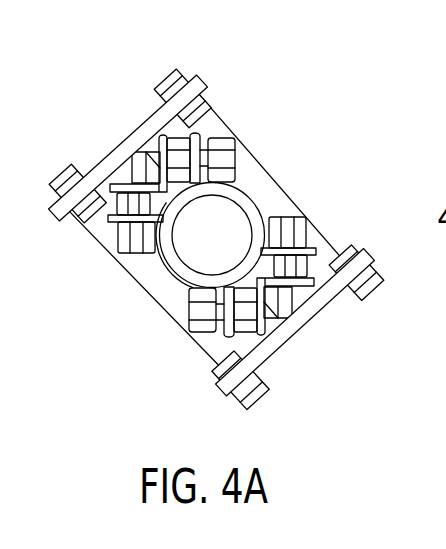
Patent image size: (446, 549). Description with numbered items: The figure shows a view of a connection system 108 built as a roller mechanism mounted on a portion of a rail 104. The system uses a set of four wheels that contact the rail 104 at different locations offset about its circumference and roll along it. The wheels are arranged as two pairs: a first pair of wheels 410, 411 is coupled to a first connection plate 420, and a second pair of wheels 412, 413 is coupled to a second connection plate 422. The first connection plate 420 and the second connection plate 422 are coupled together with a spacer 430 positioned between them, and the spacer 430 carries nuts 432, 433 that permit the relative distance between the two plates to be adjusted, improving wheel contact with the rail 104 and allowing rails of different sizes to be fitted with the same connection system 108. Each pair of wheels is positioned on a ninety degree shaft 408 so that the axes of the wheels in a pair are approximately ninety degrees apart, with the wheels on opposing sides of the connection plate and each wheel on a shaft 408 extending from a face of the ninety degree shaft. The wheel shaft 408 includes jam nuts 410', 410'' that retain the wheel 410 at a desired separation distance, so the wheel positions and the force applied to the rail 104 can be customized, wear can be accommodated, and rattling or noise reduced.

The rail 104 is at (96, 164).
The connection system 108 is at (362, 113).
The shaft 408 is at (160, 140).
The wheel 410 is at (235, 107).
The jam nut 410' is at (205, 106).
The jam nut 410'' is at (260, 124).
The wheel 411 is at (120, 228).
The wheel 412 is at (208, 335).
The wheel 413 is at (313, 230).
The first connection plate 420 is at (82, 174).
The second connection plate 422 is at (300, 322).
The spacer 430 is at (262, 183).
The nut 432 is at (175, 75).
The nut 433 is at (377, 268).